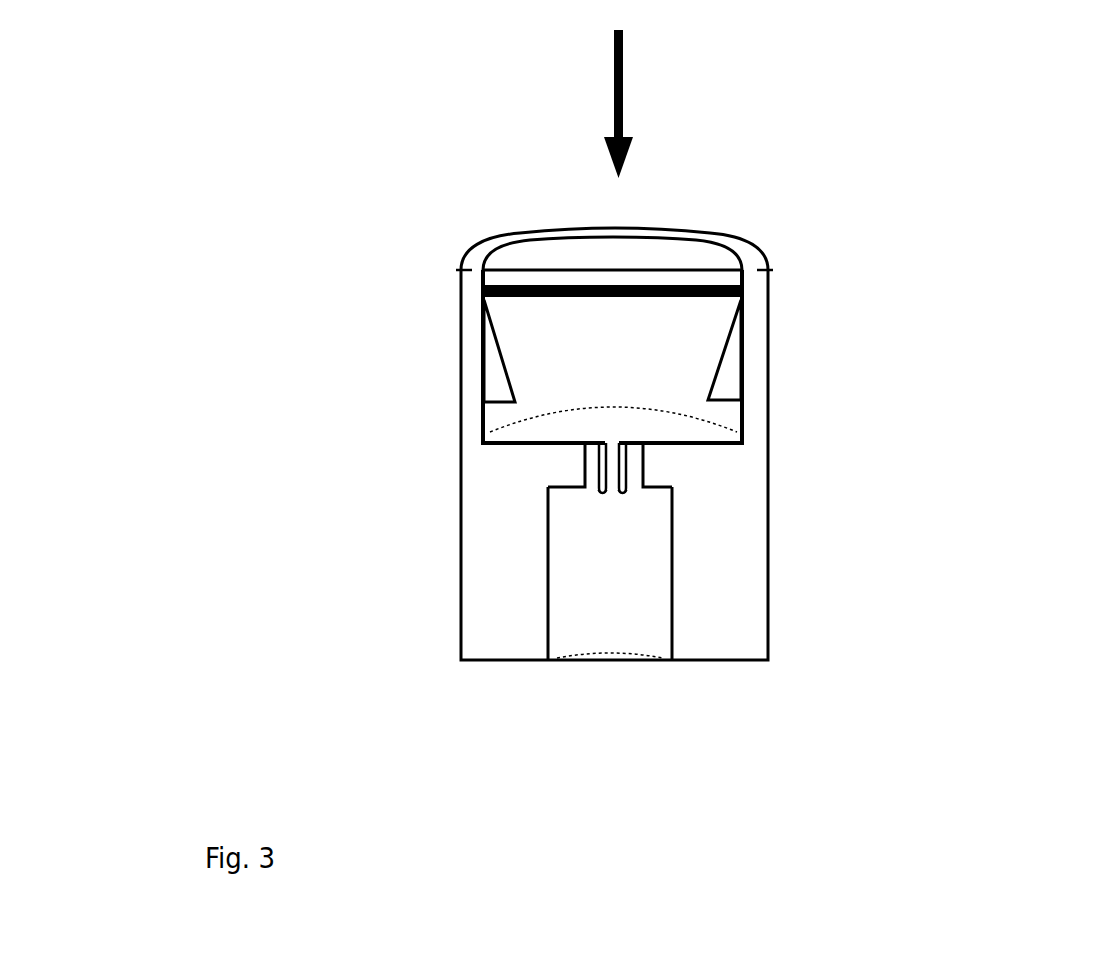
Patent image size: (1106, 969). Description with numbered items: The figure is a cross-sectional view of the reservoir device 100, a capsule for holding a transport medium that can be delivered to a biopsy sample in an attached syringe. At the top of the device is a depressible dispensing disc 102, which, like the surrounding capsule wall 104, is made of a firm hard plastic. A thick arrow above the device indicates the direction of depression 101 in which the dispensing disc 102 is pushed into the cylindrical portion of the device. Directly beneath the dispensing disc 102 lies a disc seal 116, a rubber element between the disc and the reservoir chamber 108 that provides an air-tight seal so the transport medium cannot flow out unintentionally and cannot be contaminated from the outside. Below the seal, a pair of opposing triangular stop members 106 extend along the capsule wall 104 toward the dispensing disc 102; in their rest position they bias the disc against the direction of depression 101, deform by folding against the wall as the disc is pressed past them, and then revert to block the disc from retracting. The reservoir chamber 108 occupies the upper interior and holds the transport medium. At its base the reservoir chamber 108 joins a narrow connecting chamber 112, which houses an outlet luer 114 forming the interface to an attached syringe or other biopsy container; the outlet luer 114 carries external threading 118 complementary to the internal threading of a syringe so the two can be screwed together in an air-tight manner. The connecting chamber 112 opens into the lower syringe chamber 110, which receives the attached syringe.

The reservoir device 100 is at (695, 390).
The direction of depression 101 is at (614, 75).
The dispensing disc 102 is at (612, 253).
The capsule wall 104 is at (769, 607).
The stop members 106 is at (481, 382).
The reservoir chamber 108 is at (637, 355).
The syringe chamber 110 is at (635, 575).
The connecting chamber 112 is at (583, 465).
The outlet luer 114 is at (630, 473).
The disc seal 116 is at (745, 291).
The external threading 118 is at (600, 483).